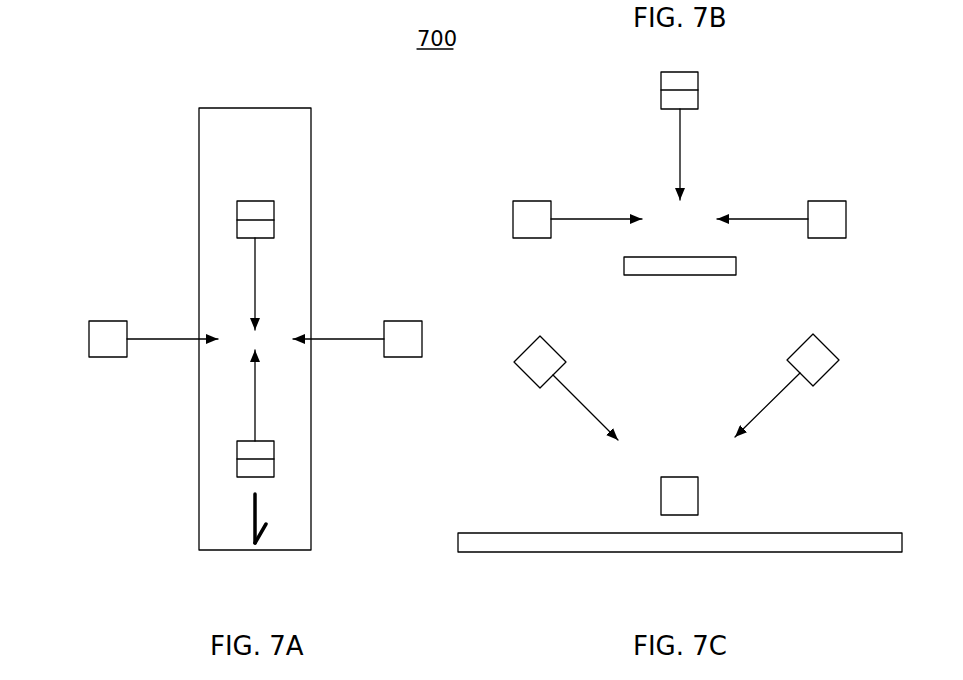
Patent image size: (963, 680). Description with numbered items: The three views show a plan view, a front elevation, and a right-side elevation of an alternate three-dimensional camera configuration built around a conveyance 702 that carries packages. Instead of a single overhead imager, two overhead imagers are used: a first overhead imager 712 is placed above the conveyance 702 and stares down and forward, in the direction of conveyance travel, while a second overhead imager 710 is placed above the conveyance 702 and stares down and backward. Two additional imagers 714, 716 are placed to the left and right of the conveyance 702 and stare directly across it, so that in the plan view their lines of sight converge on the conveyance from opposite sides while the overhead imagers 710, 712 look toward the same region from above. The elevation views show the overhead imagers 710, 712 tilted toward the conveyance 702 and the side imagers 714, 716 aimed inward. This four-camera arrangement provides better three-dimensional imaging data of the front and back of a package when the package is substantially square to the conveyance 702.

In FIG. 7A, the conveyance 702 is at (292, 146).
In FIG. 7B, the conveyance 702 is at (736, 262).
In FIG. 7C, the conveyance 702 is at (832, 550).
In FIG. 7A, the second overhead imager 710 is at (268, 451).
In FIG. 7B, the second overhead imager 710 is at (755, 117).
In FIG. 7A, the first overhead imager 712 is at (262, 212).
In FIG. 7B, the first overhead imager 712 is at (692, 81).
In FIG. 7C, the first overhead imager 712 is at (822, 347).
In FIG. 7A, the imager 714 is at (118, 321).
In FIG. 7B, the imager 714 is at (532, 200).
In FIG. 7C, the imager 714 is at (528, 385).
In FIG. 7A, the imager 716 is at (402, 321).
In FIG. 7B, the imager 716 is at (828, 200).
In FIG. 7C, the imager 716 is at (753, 481).